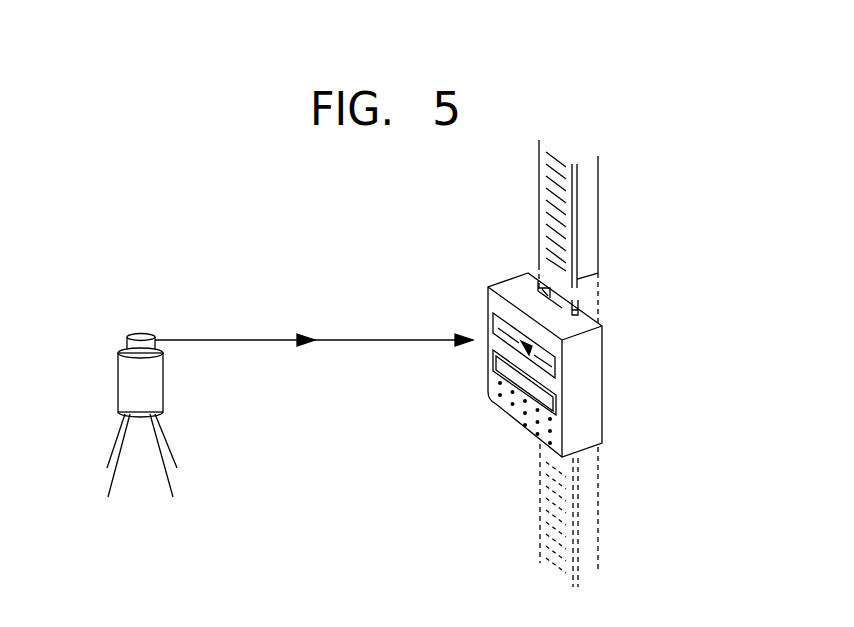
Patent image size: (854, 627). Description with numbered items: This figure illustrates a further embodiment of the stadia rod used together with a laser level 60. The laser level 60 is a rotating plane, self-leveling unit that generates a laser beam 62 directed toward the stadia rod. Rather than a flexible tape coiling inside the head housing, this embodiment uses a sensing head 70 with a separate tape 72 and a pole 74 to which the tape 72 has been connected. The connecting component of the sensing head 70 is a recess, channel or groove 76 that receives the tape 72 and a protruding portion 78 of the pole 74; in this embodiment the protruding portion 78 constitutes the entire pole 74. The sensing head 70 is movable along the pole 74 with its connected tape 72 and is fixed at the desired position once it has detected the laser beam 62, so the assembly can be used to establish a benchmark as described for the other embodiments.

The laser level 60 is at (131, 384).
The laser beam 62 is at (235, 338).
The sensing head 70 is at (628, 404).
The tape 72 is at (540, 216).
The pole 74 is at (607, 186).
The groove 76 is at (563, 310).
The protruding portion 78 is at (594, 252).